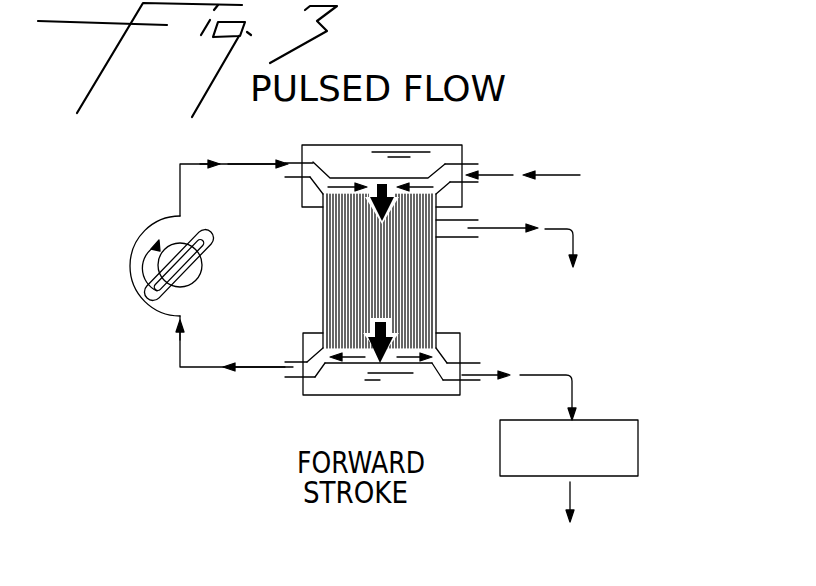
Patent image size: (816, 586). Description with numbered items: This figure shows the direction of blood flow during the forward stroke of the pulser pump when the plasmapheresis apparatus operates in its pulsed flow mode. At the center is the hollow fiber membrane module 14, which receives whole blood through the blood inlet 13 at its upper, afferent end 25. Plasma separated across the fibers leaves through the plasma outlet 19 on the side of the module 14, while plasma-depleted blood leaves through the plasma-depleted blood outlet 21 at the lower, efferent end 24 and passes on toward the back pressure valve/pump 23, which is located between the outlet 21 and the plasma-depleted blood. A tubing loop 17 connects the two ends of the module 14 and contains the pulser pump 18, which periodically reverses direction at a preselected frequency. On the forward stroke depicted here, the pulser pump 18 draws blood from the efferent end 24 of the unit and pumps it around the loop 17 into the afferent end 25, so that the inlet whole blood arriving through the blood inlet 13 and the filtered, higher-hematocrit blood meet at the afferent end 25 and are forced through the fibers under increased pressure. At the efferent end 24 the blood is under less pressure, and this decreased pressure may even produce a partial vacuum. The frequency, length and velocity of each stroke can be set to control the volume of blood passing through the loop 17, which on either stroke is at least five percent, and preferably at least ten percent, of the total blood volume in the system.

The blood inlet 13 is at (466, 164).
The hollow fiber membrane module 14 is at (437, 155).
The tubing loop 17 is at (180, 196).
The pulser pump 18 is at (217, 268).
The plasma outlet 19 is at (455, 239).
The plasma-depleted blood outlet 21 is at (472, 363).
The back pressure valve/pump 23 is at (627, 455).
The efferent end 24 is at (377, 363).
The afferent end 25 is at (365, 176).